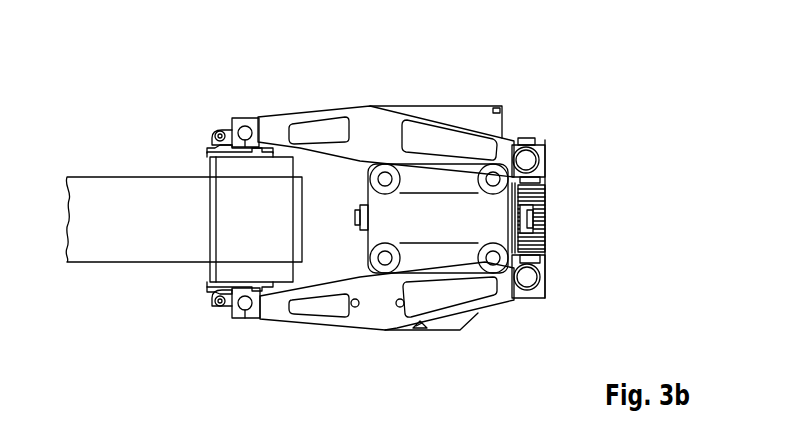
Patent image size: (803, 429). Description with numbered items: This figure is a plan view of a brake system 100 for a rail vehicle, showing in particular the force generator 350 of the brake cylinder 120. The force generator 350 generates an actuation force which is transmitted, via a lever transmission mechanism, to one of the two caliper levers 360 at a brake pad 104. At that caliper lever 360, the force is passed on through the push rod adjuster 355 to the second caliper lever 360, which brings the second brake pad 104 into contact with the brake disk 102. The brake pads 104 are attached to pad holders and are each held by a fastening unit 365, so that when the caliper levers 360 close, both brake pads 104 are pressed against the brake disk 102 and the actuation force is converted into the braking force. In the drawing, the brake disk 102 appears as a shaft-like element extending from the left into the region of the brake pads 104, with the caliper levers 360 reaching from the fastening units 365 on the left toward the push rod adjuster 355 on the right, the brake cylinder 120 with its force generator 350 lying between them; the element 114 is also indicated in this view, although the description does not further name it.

The brake system 100 is at (603, 77).
The brake disk 102 is at (125, 242).
The brake pad 104 is at (238, 170).
The shaft 114 is at (507, 232).
The brake cylinder 120 is at (453, 185).
The force generator 350 is at (488, 106).
The push rod adjuster 355 is at (543, 193).
The caliper lever 360 is at (372, 120).
The fastening unit for holding the brake pad 365 is at (250, 126).